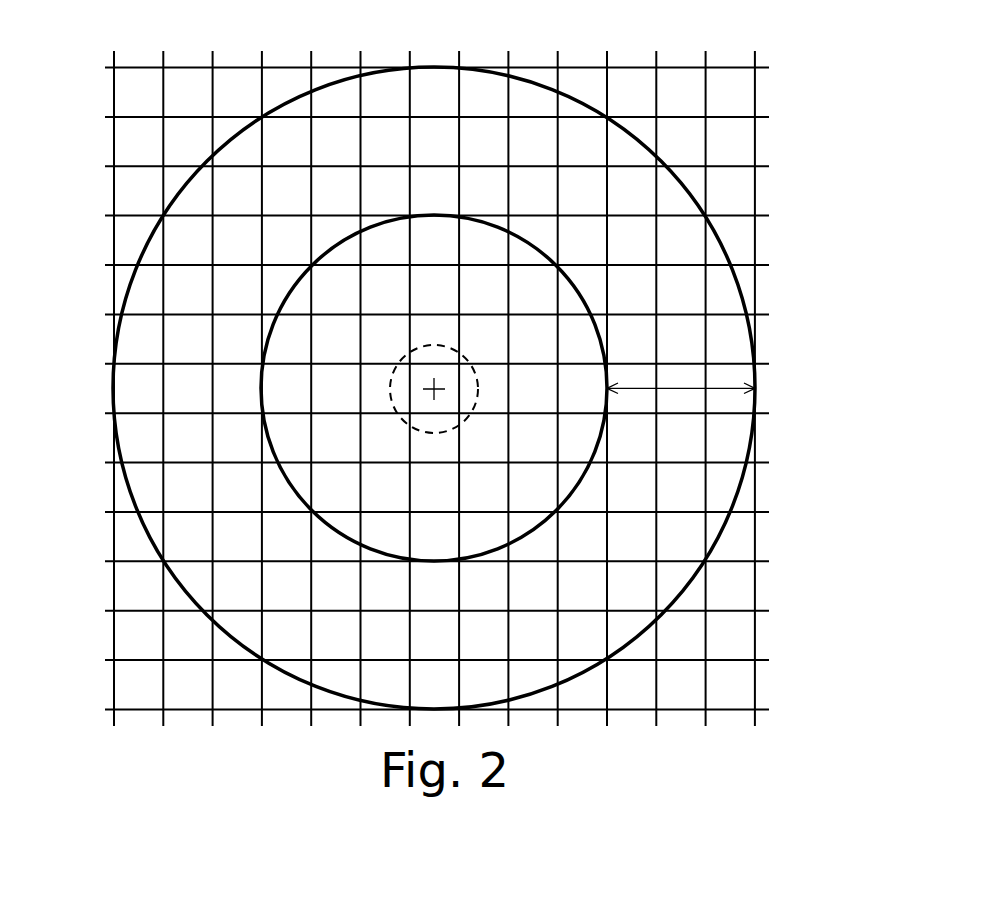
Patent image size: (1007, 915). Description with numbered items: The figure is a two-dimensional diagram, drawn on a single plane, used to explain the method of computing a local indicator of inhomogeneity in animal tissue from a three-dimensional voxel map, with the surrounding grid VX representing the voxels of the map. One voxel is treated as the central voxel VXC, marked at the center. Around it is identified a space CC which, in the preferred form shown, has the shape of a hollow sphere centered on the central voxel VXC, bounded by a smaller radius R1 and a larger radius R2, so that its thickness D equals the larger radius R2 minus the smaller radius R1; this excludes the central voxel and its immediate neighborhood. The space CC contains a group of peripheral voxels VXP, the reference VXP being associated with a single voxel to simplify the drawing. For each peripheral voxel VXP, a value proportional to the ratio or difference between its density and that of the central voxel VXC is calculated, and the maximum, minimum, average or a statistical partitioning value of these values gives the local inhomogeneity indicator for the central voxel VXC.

The voxel grid VX is at (680, 90).
The space CC is at (200, 203).
The peripheral voxel VXP is at (287, 585).
The smaller radius R1 is at (533, 247).
The larger radius R2 is at (677, 597).
The thickness D is at (681, 376).
The central voxel VXC is at (449, 400).